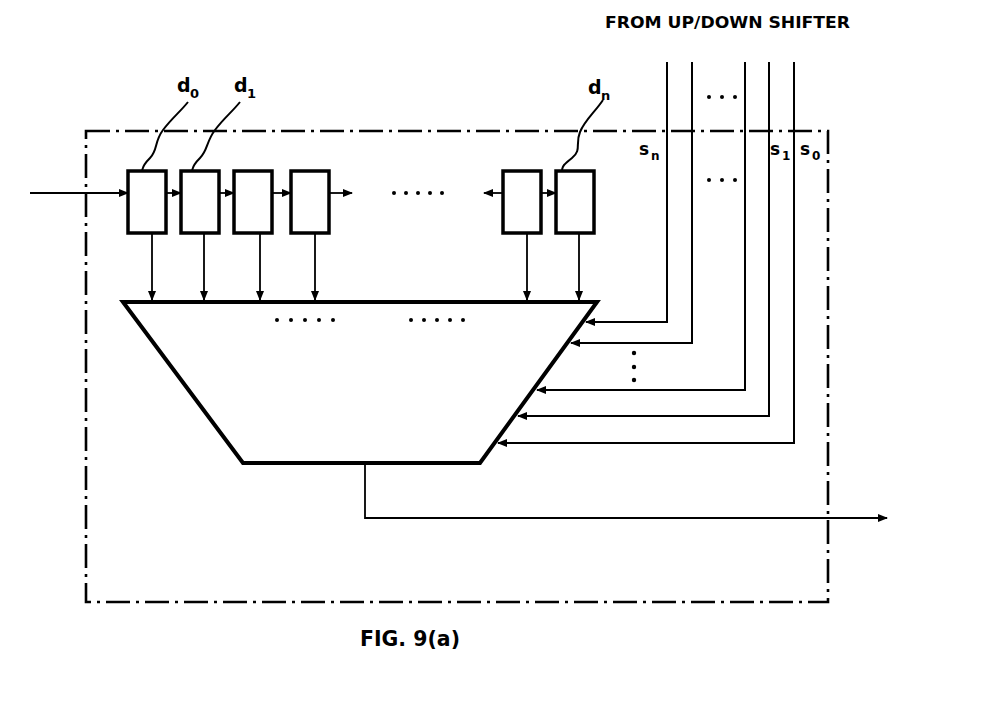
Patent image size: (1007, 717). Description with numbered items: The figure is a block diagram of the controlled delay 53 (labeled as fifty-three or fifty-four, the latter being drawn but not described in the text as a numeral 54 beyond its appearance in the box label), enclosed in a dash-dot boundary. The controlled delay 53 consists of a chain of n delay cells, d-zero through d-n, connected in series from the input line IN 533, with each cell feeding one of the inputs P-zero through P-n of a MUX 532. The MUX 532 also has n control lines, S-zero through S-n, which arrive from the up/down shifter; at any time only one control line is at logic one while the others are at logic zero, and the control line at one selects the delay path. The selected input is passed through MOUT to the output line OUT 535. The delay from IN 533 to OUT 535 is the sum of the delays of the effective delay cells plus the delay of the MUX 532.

The controlled delay 53 is at (457, 412).
The controlled delay 54 is at (167, 604).
The MUX 532 is at (218, 437).
The IN 533 is at (85, 193).
The OUT 535 is at (830, 516).